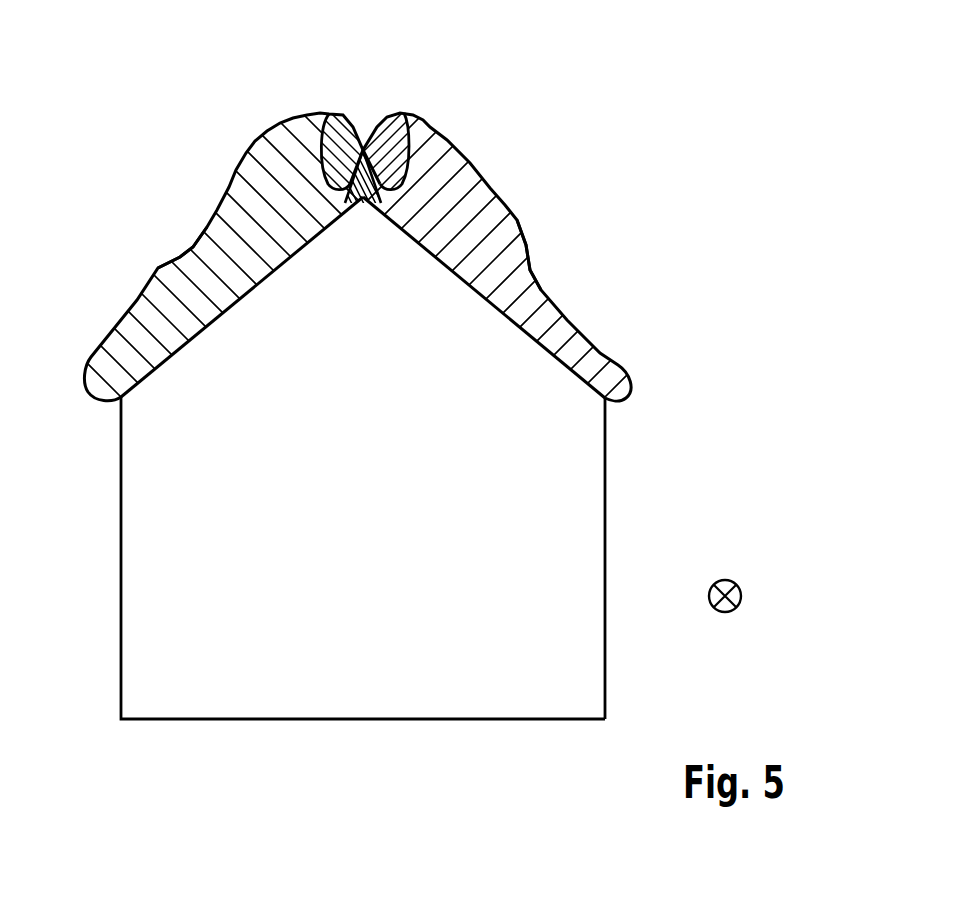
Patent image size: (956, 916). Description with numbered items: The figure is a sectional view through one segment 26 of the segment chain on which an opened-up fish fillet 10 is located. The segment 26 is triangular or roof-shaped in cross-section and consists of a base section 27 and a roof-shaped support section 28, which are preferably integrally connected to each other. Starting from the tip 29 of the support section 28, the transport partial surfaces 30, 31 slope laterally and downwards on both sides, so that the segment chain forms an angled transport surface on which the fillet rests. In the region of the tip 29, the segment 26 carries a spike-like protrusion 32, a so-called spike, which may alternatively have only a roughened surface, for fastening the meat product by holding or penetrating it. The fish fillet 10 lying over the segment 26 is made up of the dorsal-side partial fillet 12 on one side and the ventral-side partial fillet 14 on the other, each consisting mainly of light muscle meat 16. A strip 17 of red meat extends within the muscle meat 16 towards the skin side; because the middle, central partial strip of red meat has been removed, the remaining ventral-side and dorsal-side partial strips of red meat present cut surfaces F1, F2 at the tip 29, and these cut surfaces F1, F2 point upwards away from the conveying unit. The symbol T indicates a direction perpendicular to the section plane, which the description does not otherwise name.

The fish fillet 10 is at (496, 96).
The dorsal-side partial fillet 12 is at (243, 183).
The ventral-side partial fillet 14 is at (488, 203).
The muscle meat 16 is at (267, 160).
The strip of red meat 17 is at (329, 145).
The segment 26 is at (590, 543).
The base section 27 is at (378, 677).
The support section 28 is at (378, 272).
The tip 29 is at (363, 207).
The transport partial surface 30 is at (203, 332).
The transport partial surface 31 is at (522, 328).
The spike-like protrusion 32 is at (335, 183).
The cut surface F1 is at (353, 115).
The cut surface F2 is at (373, 115).
The transverse direction T is at (737, 597).